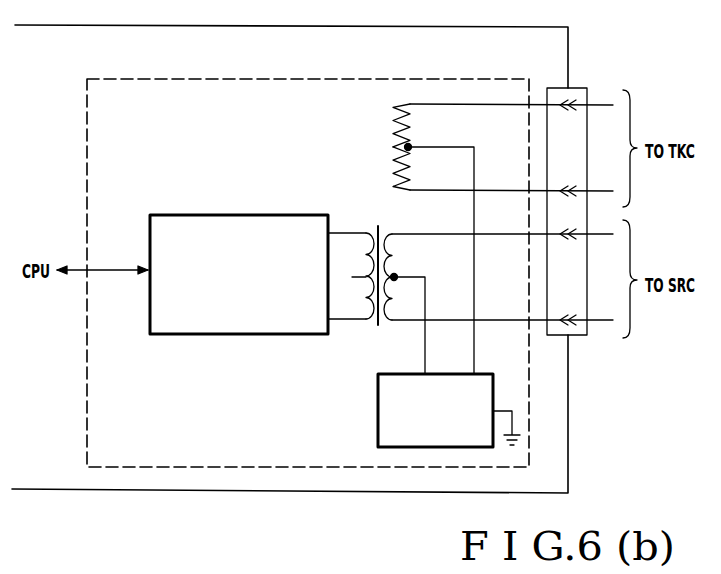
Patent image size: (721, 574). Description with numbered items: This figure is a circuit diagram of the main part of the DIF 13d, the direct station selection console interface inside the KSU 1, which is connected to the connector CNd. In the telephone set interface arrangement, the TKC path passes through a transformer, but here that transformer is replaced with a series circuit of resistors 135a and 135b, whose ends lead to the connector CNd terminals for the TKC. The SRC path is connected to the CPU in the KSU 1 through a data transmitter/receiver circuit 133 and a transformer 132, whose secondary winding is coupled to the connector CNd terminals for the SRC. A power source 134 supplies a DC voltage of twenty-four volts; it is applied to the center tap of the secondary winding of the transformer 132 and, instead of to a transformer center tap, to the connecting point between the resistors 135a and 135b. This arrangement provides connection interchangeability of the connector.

The KSU 1 is at (243, 65).
The DIF 13d is at (407, 80).
The transformer 132 is at (373, 327).
The data transmitter/receiver circuit 133 is at (178, 336).
The power source 134 is at (377, 428).
The resistor 135a is at (392, 120).
The resistor 135b is at (392, 173).
The connector CNd is at (580, 88).